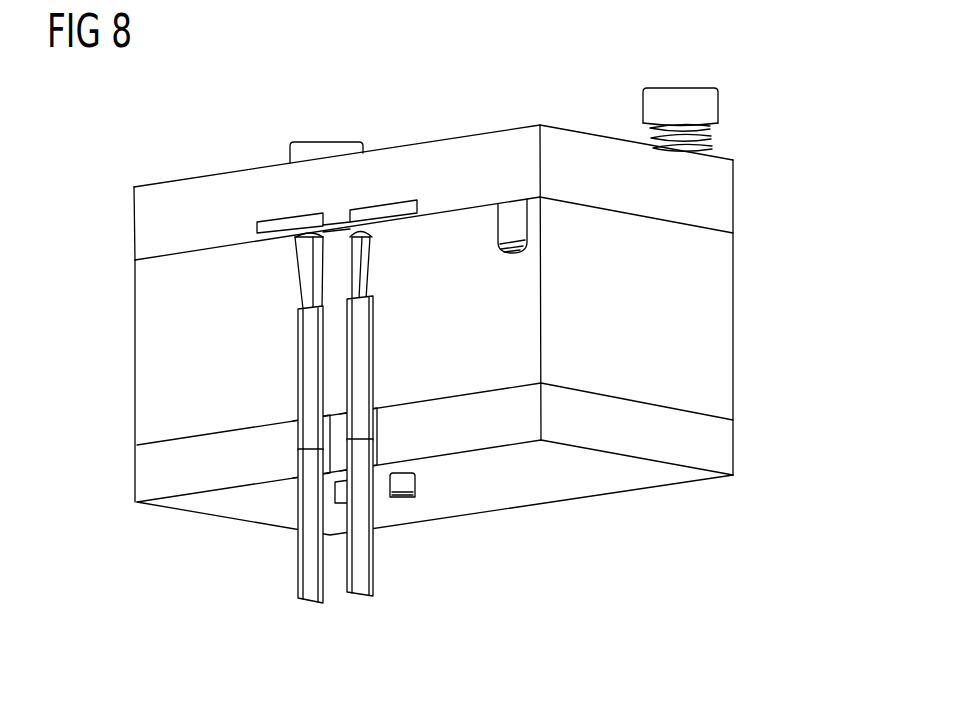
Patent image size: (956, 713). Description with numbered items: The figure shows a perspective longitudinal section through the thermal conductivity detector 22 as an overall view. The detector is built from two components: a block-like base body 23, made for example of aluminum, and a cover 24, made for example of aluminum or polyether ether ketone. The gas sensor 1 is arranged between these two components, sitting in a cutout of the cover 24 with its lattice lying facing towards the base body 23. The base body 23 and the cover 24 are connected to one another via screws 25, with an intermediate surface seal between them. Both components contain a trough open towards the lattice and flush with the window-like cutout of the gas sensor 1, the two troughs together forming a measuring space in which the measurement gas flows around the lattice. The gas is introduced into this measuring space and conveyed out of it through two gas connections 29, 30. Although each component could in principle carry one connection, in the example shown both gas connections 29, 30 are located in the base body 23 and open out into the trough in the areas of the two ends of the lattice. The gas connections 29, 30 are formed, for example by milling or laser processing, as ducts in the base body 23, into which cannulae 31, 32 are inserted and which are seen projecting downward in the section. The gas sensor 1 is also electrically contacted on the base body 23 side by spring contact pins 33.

The gas sensor 1 is at (268, 219).
The thermal conductivity detector 22 is at (397, 279).
The base body 23 is at (145, 352).
The cover 24 is at (145, 223).
The screws 25 is at (308, 150).
The gas connection 29 is at (311, 348).
The gas connection 30 is at (362, 348).
The cannula 31 is at (300, 565).
The cannula 32 is at (370, 565).
The spring contact pins 33 is at (413, 487).